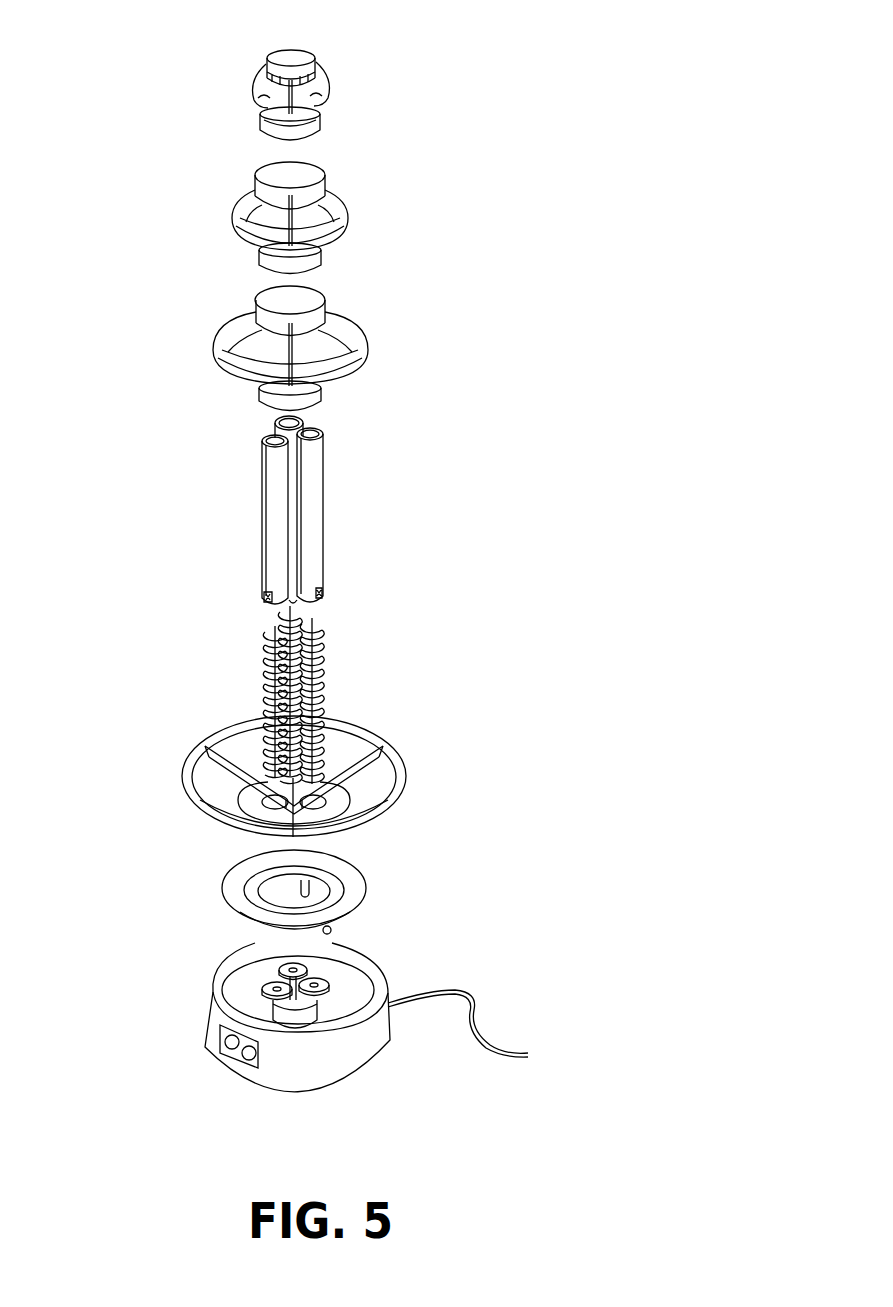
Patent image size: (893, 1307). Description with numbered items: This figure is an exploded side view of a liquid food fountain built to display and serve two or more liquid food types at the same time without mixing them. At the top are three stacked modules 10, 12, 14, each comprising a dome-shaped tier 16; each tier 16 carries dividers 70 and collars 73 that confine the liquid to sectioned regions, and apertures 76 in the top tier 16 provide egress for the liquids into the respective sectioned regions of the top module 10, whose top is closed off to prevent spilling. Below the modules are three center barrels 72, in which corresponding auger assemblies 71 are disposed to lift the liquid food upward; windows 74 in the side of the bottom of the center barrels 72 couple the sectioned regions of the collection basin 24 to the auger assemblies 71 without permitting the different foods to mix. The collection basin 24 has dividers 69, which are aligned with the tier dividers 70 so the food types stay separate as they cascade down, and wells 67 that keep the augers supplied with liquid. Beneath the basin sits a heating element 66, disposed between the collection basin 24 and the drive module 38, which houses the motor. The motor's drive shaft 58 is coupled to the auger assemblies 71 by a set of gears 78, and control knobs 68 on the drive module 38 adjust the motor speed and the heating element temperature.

The module 10 is at (226, 105).
The module 12 is at (218, 210).
The module 14 is at (216, 307).
The dome-shaped tier 16 is at (352, 48).
The collection basin 24 is at (368, 797).
The drive module 38 is at (330, 1080).
The drive shaft 58 is at (318, 1005).
The heating element 66 is at (360, 887).
The wells 67 is at (265, 800).
The control knobs 68 is at (230, 1040).
The dividers 69 is at (375, 767).
The dividers 70 is at (318, 112).
The auger assemblies 71 is at (325, 690).
The center barrels 72 is at (322, 517).
The collars 73 is at (335, 196).
The windows 74 is at (325, 598).
The apertures 76 is at (257, 70).
The set of gears 78 is at (320, 971).